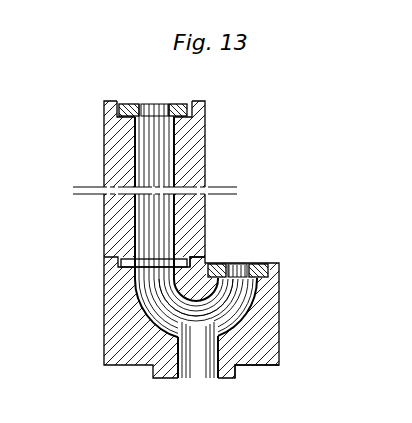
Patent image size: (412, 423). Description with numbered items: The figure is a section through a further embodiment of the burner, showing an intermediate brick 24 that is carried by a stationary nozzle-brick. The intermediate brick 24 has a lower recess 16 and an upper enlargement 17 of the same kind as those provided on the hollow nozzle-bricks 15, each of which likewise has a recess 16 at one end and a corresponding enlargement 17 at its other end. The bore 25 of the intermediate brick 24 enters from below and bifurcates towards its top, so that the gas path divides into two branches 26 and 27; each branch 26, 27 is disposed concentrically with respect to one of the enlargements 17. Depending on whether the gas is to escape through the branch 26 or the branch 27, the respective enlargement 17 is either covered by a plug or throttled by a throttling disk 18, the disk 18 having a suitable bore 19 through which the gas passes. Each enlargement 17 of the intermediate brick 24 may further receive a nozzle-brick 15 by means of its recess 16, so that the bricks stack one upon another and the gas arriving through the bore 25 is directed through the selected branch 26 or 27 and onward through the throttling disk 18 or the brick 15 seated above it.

The nozzle-brick 15 is at (192, 165).
The recess 16 is at (189, 256).
The enlargement 17 is at (118, 107).
The throttling disk 18 is at (193, 102).
The bore 19 is at (148, 103).
The intermediate brick 24 is at (128, 337).
The bore 25 is at (203, 360).
The branch 26 is at (152, 280).
The branch 27 is at (228, 307).